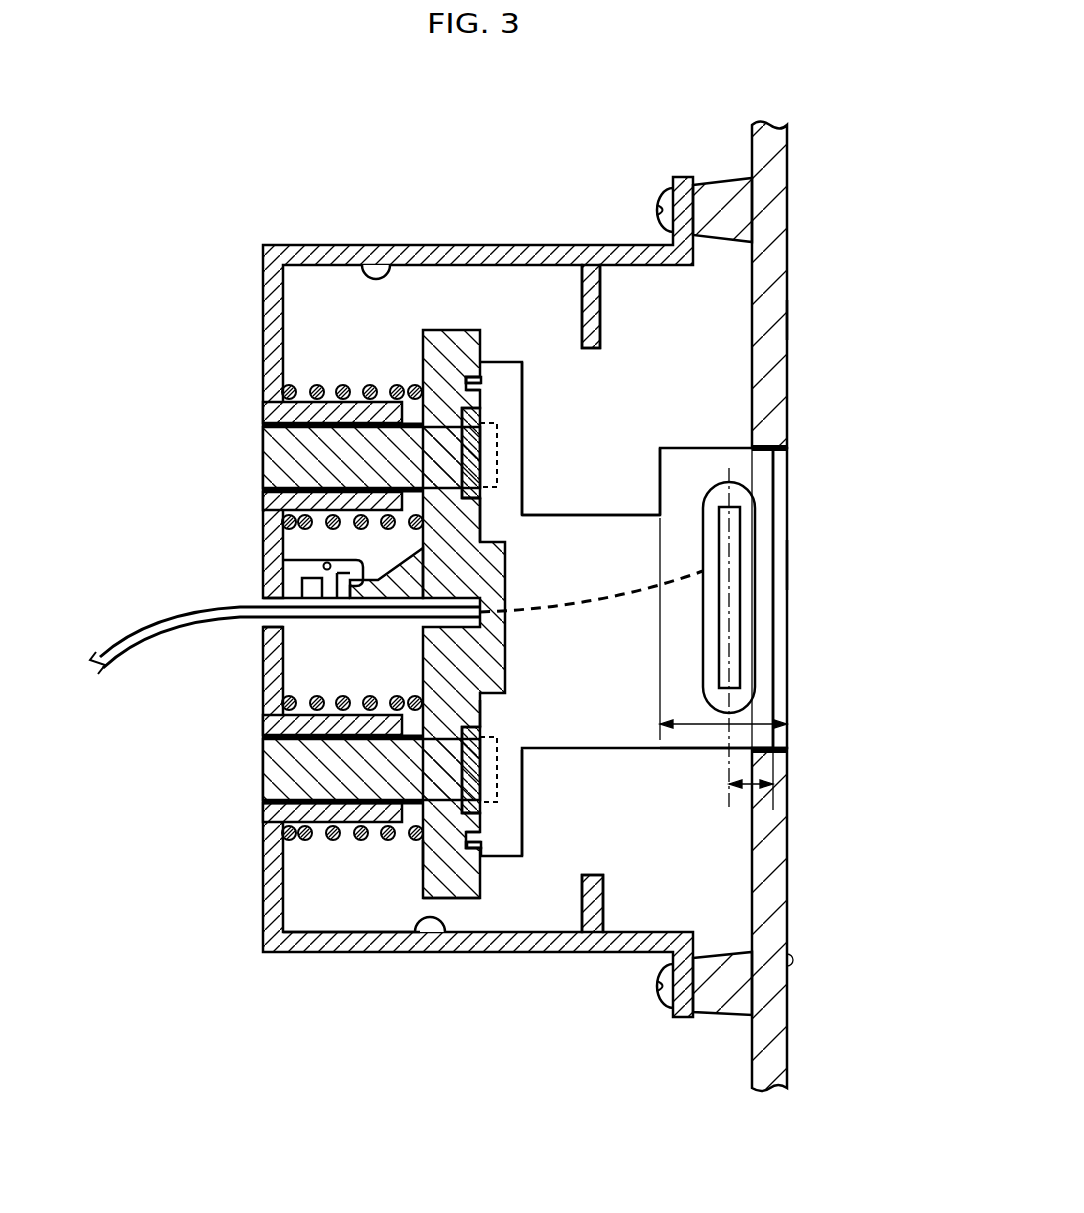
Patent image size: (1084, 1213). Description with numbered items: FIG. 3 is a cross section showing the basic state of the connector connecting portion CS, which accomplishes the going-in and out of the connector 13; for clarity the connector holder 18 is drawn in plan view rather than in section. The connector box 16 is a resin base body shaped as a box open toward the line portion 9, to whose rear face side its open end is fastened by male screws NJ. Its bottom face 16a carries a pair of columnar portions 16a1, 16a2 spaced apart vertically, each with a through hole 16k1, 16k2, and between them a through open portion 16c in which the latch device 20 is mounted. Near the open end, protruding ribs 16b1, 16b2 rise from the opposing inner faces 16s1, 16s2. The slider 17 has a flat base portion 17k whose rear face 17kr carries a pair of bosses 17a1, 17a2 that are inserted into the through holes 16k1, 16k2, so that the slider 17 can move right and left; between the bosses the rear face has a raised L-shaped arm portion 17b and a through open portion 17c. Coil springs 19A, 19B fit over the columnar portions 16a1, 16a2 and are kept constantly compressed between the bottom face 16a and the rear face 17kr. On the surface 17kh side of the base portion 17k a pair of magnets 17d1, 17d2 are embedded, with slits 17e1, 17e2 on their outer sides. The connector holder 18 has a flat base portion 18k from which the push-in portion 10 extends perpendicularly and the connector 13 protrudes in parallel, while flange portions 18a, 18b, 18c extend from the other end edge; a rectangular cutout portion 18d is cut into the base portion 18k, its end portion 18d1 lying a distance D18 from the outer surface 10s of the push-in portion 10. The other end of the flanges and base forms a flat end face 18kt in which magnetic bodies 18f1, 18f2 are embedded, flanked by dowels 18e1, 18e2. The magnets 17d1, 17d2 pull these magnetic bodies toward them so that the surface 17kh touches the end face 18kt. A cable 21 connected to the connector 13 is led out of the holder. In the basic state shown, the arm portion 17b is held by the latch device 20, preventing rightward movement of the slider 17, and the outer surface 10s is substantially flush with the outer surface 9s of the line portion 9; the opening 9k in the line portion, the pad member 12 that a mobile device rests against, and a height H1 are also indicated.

The connector connecting portion CS is at (234, 206).
The line portion 9 is at (790, 215).
The outer surface of the line portion 9s is at (790, 318).
The wall opening 9k is at (790, 380).
The push-in portion 10 is at (785, 450).
The outer surface of the push-in portion 10s is at (790, 563).
The pad member 12 is at (797, 962).
The connector 13 is at (742, 620).
The connector box 16 is at (300, 245).
The bottom face 16a is at (290, 955).
The columnar portion 16a1 is at (375, 410).
The columnar portion 16a2 is at (330, 830).
The protruding rib 16b1 is at (585, 300).
The protruding rib 16b2 is at (603, 900).
The through open portion 16c is at (262, 622).
The through hole 16k1 is at (283, 425).
The through hole 16k2 is at (268, 802).
The inner face 16s1 is at (370, 268).
The inner face 16s2 is at (425, 925).
The slider 17 is at (450, 330).
The boss 17a1 is at (265, 455).
The boss 17a2 is at (265, 765).
The arm portion 17b is at (505, 570).
The through open portion 17c is at (505, 668).
The magnet 17d1 is at (478, 497).
The magnet 17d2 is at (478, 795).
The slit 17e1 is at (480, 378).
The slit 17e2 is at (480, 846).
The base portion 17k is at (410, 920).
The surface 17kh is at (485, 720).
The rear face 17kr is at (422, 853).
The connector holder 18 is at (705, 448).
The flange portion 18a is at (510, 362).
The flange portion 18b is at (497, 858).
The flange portion 18c is at (505, 612).
The cutout portion 18d is at (622, 515).
The end portion 18d1 is at (652, 448).
The dowel 18e1 is at (477, 385).
The dowel 18e2 is at (477, 840).
The magnetic body 18f1 is at (497, 453).
The magnetic body 18f2 is at (497, 765).
The base portion 18k is at (680, 752).
The end face 18kt is at (480, 525).
The coil spring 19A is at (316, 385).
The coil spring 19B is at (290, 850).
The latch device 20 is at (322, 567).
The cable 21 is at (152, 625).
The distance D18 is at (752, 724).
The height dimension H1 is at (758, 784).
The male screw NJ is at (655, 200).